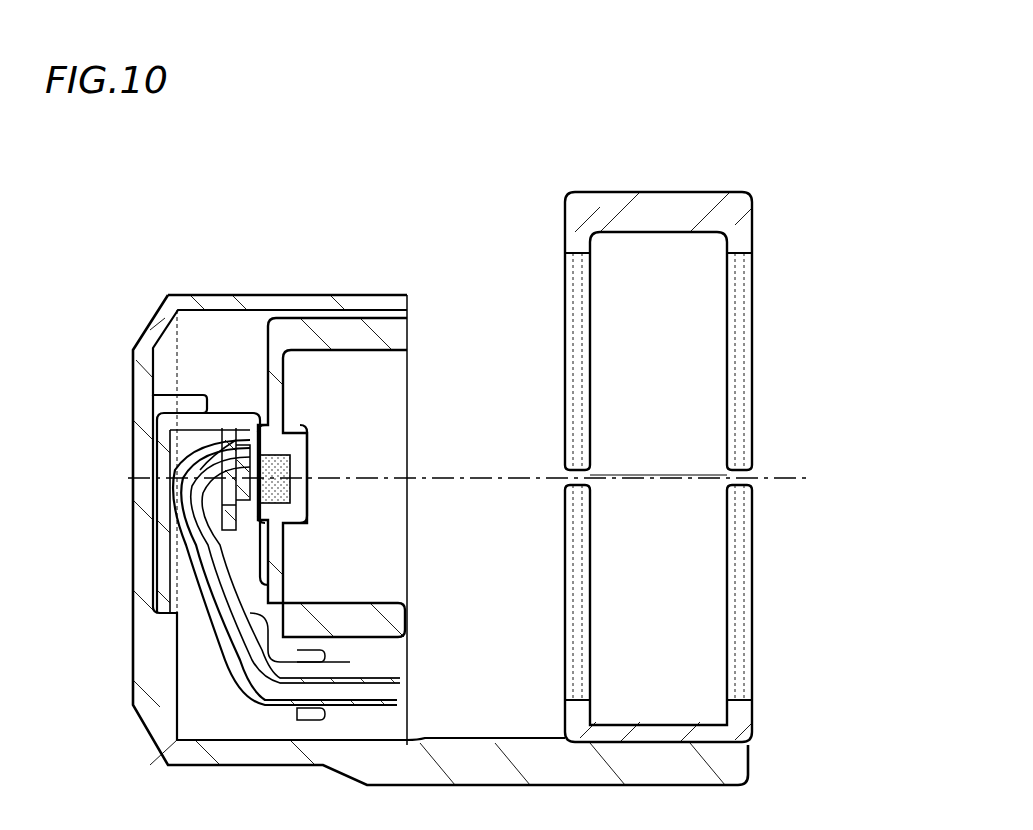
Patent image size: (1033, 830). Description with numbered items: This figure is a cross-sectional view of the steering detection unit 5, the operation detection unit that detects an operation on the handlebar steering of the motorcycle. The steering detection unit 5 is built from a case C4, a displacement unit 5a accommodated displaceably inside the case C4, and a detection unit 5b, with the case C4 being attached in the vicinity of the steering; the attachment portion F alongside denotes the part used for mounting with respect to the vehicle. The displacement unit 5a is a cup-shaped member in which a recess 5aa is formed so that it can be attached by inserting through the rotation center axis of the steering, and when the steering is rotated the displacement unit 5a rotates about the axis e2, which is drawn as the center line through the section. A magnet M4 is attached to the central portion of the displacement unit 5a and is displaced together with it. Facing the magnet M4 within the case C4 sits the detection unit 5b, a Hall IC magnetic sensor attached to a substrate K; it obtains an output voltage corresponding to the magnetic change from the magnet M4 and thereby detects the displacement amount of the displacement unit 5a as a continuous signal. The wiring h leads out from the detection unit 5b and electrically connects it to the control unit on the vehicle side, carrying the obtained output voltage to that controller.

The steering detection unit 5 is at (100, 290).
The case C4 is at (205, 297).
The detection unit 5b is at (200, 455).
The substrate K is at (225, 485).
The magnet M4 is at (300, 462).
The displacement unit 5a is at (312, 500).
The recess 5aa is at (365, 605).
The axis e2 is at (492, 480).
The wiring h is at (262, 700).
The attachment portion F is at (668, 200).